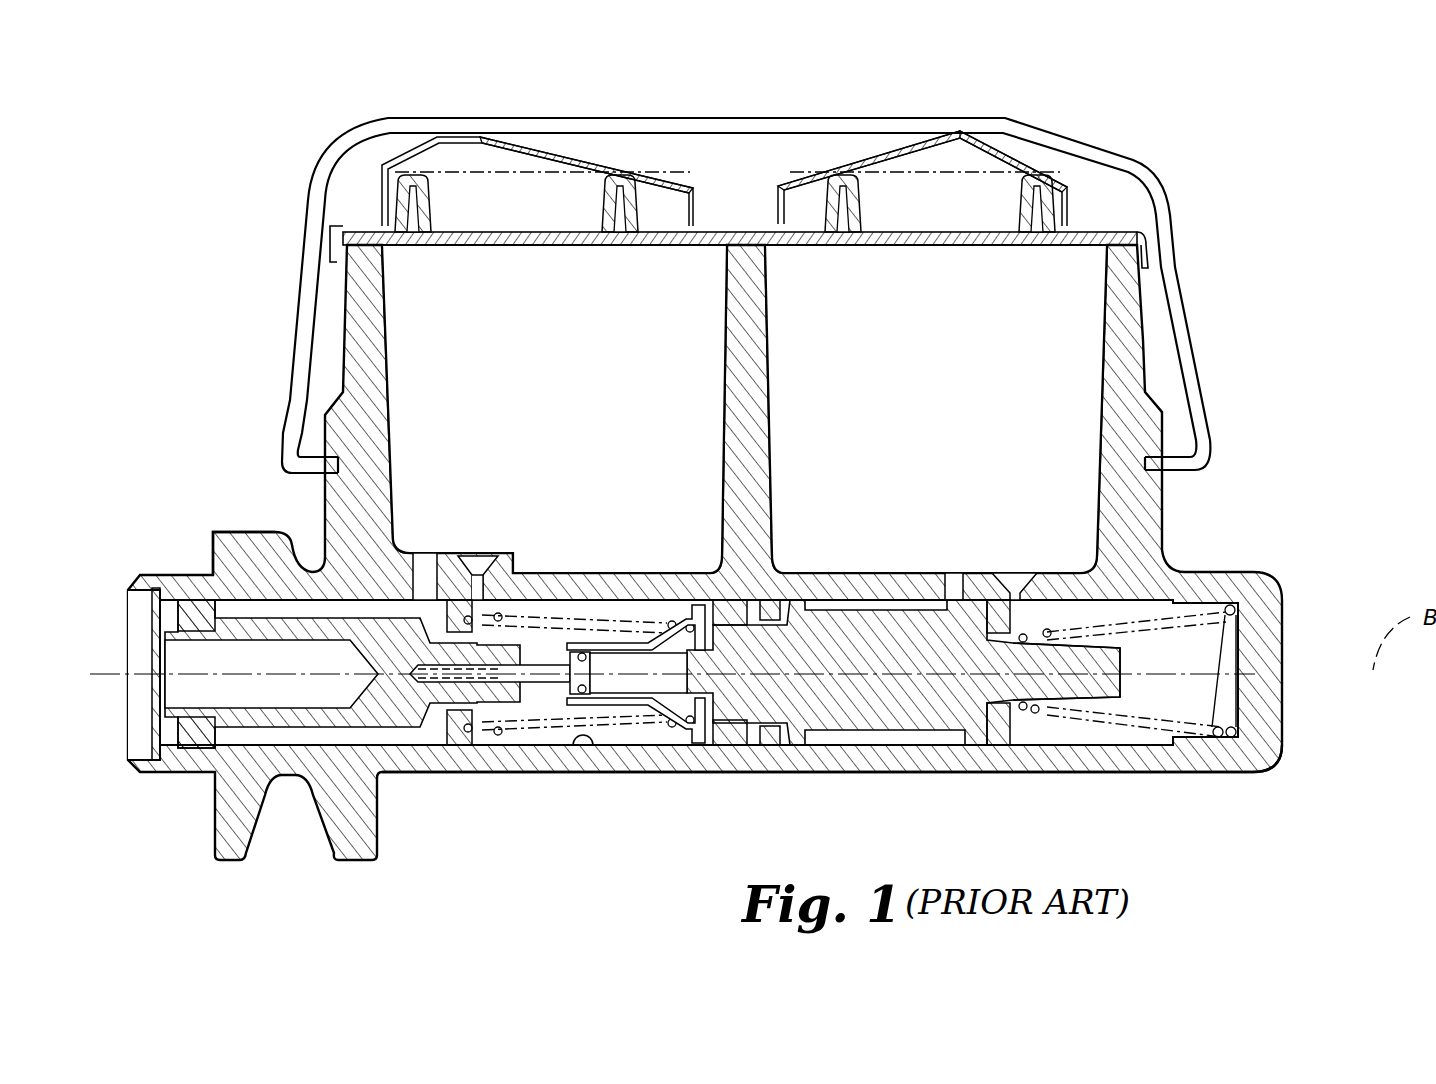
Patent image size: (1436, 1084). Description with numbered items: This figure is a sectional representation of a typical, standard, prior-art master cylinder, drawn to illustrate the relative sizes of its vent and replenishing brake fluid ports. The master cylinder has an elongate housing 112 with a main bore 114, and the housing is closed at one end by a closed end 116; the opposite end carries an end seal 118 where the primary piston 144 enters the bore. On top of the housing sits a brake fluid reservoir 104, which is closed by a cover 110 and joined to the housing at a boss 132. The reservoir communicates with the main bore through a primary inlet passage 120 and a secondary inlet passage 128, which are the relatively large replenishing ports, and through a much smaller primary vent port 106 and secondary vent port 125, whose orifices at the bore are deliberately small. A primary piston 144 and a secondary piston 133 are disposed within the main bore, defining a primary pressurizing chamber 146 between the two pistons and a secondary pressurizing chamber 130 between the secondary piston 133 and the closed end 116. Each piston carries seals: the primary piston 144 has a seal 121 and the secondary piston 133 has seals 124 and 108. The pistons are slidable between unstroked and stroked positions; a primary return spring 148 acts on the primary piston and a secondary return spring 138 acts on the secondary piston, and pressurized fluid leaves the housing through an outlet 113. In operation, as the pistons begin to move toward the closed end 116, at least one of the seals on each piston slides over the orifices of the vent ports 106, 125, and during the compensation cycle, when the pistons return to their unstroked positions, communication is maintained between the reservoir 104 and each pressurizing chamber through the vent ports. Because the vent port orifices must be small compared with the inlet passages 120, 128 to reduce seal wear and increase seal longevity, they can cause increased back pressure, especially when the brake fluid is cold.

The reservoir 104 is at (345, 315).
The compensation port 106 is at (482, 594).
The secondary piston seal 108 is at (990, 598).
The reservoir cap 110 is at (310, 122).
The master cylinder housing 112 is at (1260, 573).
The outlet port 113 is at (583, 750).
The housing bottom wall 114 is at (640, 750).
The housing end wall 116 is at (1282, 710).
The end seal 118 is at (130, 590).
The reservoir port 120 is at (415, 553).
The valve seat 121 is at (440, 600).
The retainer washer 124 is at (940, 597).
The secondary compensation port 125 is at (963, 600).
The primary piston seal 128 is at (790, 600).
The spring seat 130 is at (1077, 600).
The housing boss 132 is at (237, 555).
The secondary piston 133 is at (840, 600).
The secondary return spring 138 is at (1193, 737).
The primary piston 144 is at (190, 600).
The cylinder bore 146 is at (617, 600).
The primary return spring 148 is at (538, 742).